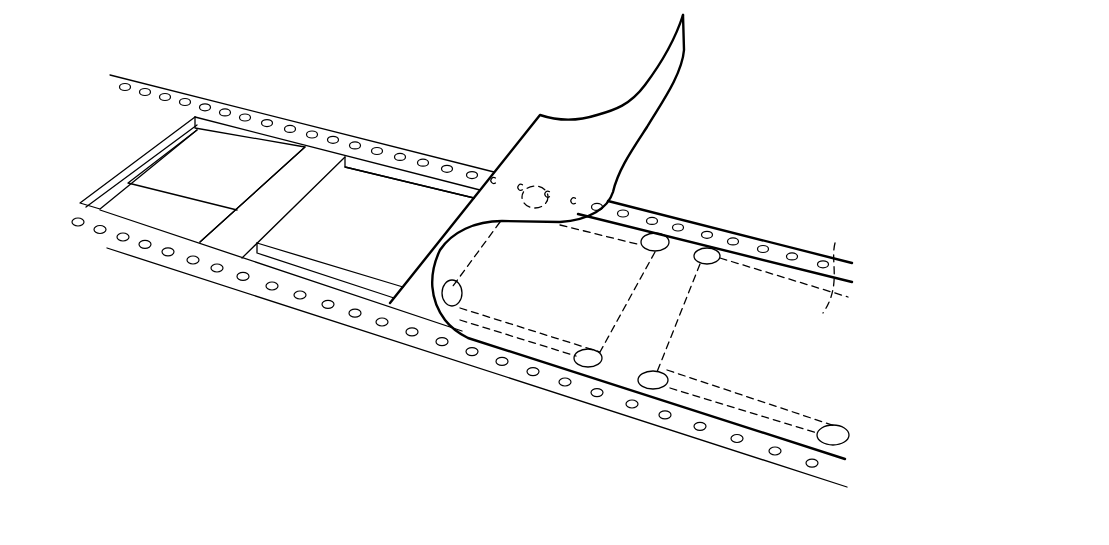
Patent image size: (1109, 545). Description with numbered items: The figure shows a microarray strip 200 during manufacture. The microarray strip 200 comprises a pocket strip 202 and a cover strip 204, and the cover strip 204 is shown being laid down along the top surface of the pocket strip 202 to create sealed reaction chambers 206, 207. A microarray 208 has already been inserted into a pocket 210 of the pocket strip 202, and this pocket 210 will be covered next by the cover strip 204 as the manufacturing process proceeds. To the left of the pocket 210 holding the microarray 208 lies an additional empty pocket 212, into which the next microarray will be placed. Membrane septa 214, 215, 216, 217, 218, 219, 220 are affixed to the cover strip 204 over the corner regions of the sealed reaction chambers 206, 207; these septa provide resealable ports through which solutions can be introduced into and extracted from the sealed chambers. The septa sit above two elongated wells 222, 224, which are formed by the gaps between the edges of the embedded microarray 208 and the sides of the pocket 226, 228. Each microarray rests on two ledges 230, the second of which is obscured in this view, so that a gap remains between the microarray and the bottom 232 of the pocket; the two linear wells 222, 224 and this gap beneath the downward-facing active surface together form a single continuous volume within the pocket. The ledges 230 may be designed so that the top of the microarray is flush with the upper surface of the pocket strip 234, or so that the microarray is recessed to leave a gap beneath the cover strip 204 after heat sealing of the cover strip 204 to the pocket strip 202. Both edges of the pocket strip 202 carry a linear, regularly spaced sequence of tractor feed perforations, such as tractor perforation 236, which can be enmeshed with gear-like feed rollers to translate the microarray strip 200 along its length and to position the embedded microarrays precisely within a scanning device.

The microarray strip 200 is at (412, 44).
The pocket strip 202 is at (157, 267).
The cover strip 204 is at (680, 72).
The sealed reaction chamber 206 is at (598, 250).
The sealed reaction chamber 207 is at (840, 264).
The microarray 208 is at (424, 205).
The pocket 210 is at (348, 288).
The empty pocket 212 is at (233, 160).
The membrane septum 214 is at (835, 427).
The membrane septum 215 is at (713, 258).
The membrane septum 216 is at (658, 376).
The membrane septum 217 is at (590, 352).
The membrane septum 218 is at (658, 236).
The membrane septum 219 is at (454, 307).
The membrane septum 220 is at (535, 186).
The elongated well 222 is at (307, 272).
The elongated well 224 is at (360, 168).
The side of pocket 226 is at (245, 281).
The side of pocket 228 is at (407, 177).
The ledge 230 is at (128, 183).
The bottom of pocket 232 is at (195, 187).
The upper surface of pocket strip 234 is at (318, 172).
The tractor perforation 236 is at (735, 441).